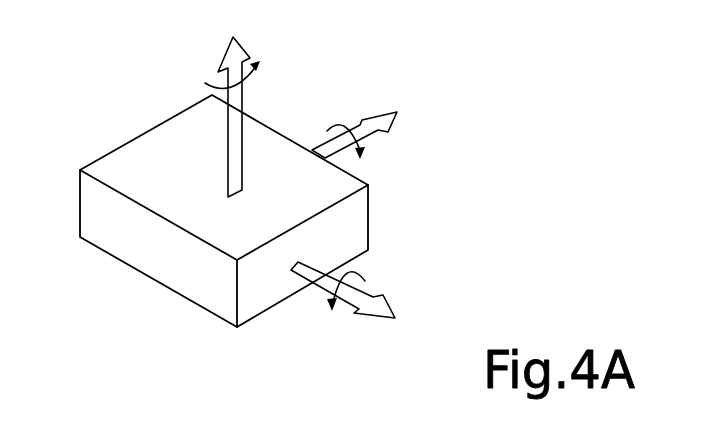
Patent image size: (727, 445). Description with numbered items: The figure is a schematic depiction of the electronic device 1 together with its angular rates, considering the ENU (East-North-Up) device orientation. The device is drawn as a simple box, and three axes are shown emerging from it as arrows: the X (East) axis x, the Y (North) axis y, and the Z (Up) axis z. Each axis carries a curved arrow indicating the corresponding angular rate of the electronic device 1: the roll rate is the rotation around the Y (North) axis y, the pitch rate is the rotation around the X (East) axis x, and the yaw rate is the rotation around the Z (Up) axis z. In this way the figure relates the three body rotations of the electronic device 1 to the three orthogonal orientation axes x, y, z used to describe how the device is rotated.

The electronic device 1 is at (108, 262).
The X (East) axis x is at (347, 310).
The Y (North) axis y is at (392, 135).
The Z (Up) axis z is at (263, 116).